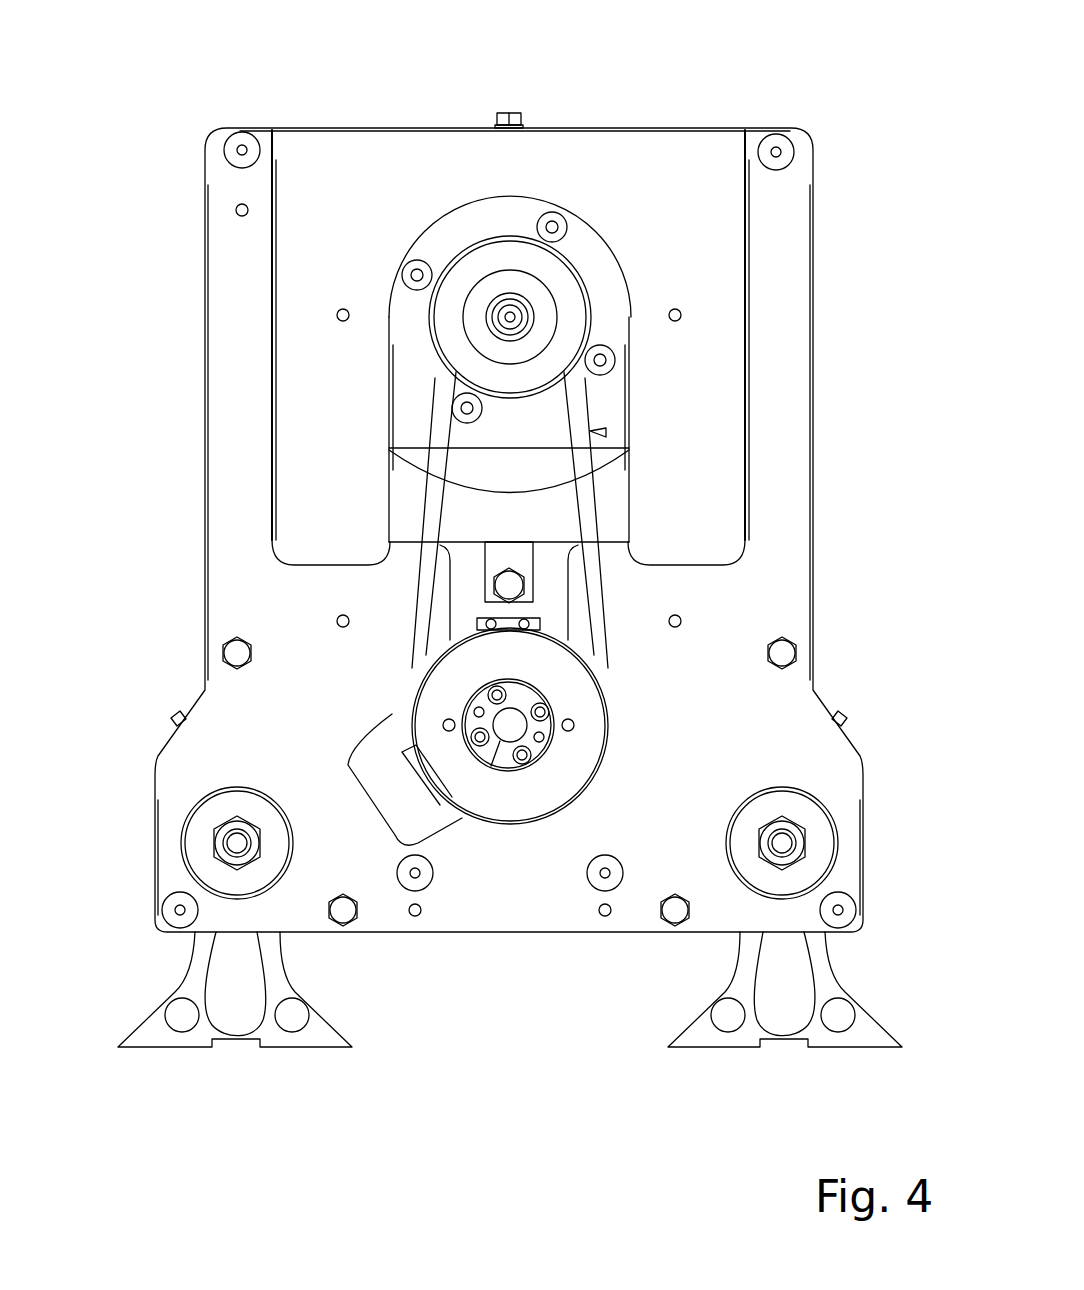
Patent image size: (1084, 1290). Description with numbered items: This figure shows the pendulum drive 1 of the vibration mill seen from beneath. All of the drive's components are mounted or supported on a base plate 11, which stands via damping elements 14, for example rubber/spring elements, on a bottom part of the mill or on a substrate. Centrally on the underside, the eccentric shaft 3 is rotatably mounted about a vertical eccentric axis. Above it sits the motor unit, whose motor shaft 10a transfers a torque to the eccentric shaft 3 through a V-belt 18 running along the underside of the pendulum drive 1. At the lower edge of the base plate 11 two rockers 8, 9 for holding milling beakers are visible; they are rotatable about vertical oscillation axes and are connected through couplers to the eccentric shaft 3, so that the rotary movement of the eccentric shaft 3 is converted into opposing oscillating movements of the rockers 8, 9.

The pendulum drive 1 is at (886, 106).
The eccentric shaft 3 is at (505, 720).
The rocker 8 is at (820, 1000).
The rocker 9 is at (198, 1000).
The motor shaft 10a is at (505, 316).
The base plate 11 is at (232, 355).
The damping elements 14 is at (242, 148).
The V-belt 18 is at (580, 500).